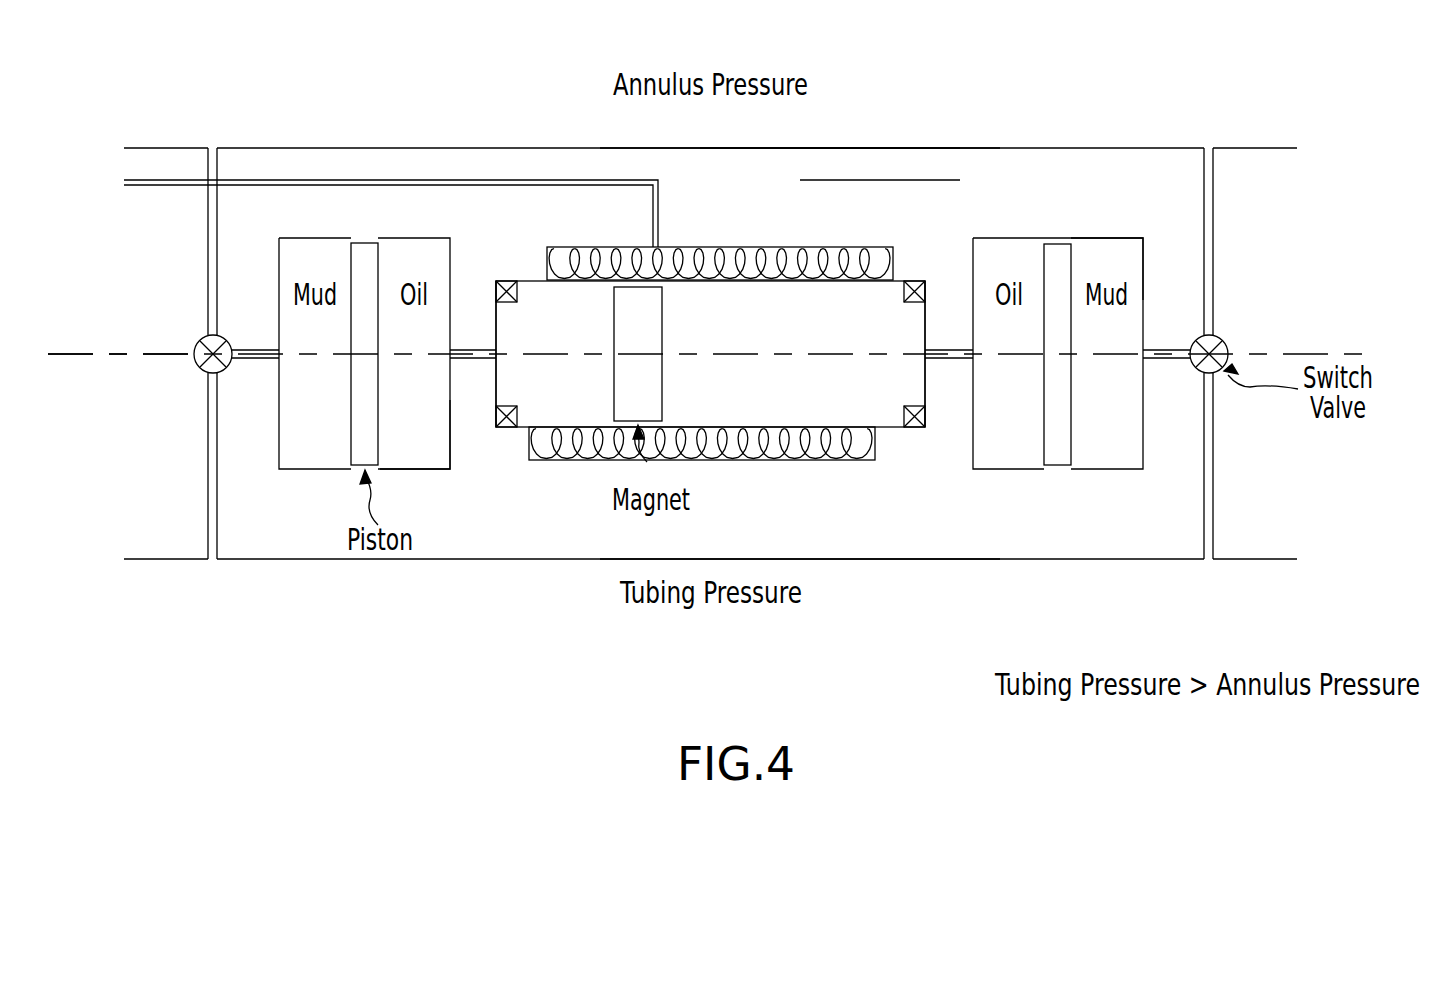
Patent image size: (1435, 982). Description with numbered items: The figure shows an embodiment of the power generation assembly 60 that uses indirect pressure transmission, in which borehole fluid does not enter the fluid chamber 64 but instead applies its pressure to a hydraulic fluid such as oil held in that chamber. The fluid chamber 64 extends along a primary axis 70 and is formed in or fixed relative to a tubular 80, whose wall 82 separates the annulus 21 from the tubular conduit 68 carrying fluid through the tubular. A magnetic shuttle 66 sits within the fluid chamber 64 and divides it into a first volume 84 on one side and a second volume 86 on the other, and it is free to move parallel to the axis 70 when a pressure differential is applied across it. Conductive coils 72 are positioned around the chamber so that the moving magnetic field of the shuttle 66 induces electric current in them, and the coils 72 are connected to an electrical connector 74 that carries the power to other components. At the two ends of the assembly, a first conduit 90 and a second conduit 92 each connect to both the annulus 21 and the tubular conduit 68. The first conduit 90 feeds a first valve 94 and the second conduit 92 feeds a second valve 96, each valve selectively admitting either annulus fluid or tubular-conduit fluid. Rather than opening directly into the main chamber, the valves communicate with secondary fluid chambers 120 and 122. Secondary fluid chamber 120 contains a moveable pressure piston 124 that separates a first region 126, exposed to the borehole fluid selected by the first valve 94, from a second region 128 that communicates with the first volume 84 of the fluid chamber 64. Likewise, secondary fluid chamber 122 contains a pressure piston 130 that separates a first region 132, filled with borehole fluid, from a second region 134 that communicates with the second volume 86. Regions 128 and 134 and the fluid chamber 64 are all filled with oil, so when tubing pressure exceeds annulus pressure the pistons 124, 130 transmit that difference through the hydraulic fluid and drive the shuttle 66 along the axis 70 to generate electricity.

The annulus 21 is at (848, 55).
The power generation assembly 60 is at (293, 93).
The fluid chamber 64 is at (522, 279).
The magnetic shuttle 66 is at (640, 327).
The tubular conduit 68 is at (849, 649).
The primary axis 70 is at (170, 352).
The conductive coils 72 is at (759, 260).
The electrical connector 74 is at (478, 186).
The tubular 80 is at (830, 148).
The wall 82 is at (883, 172).
The first volume 84 is at (897, 306).
The second volume 86 is at (525, 399).
The first conduit 90 is at (1214, 217).
The second conduit 92 is at (207, 481).
The first valve 94 is at (1222, 339).
The second valve 96 is at (228, 344).
The secondary fluid chamber 120 is at (1082, 238).
The secondary fluid chamber 122 is at (404, 239).
The pressure piston 124 is at (1057, 459).
The first region 126 is at (1133, 250).
The second region 128 is at (1004, 459).
The pressure piston 130 is at (368, 397).
The first region 132 is at (312, 247).
The second region 134 is at (426, 458).